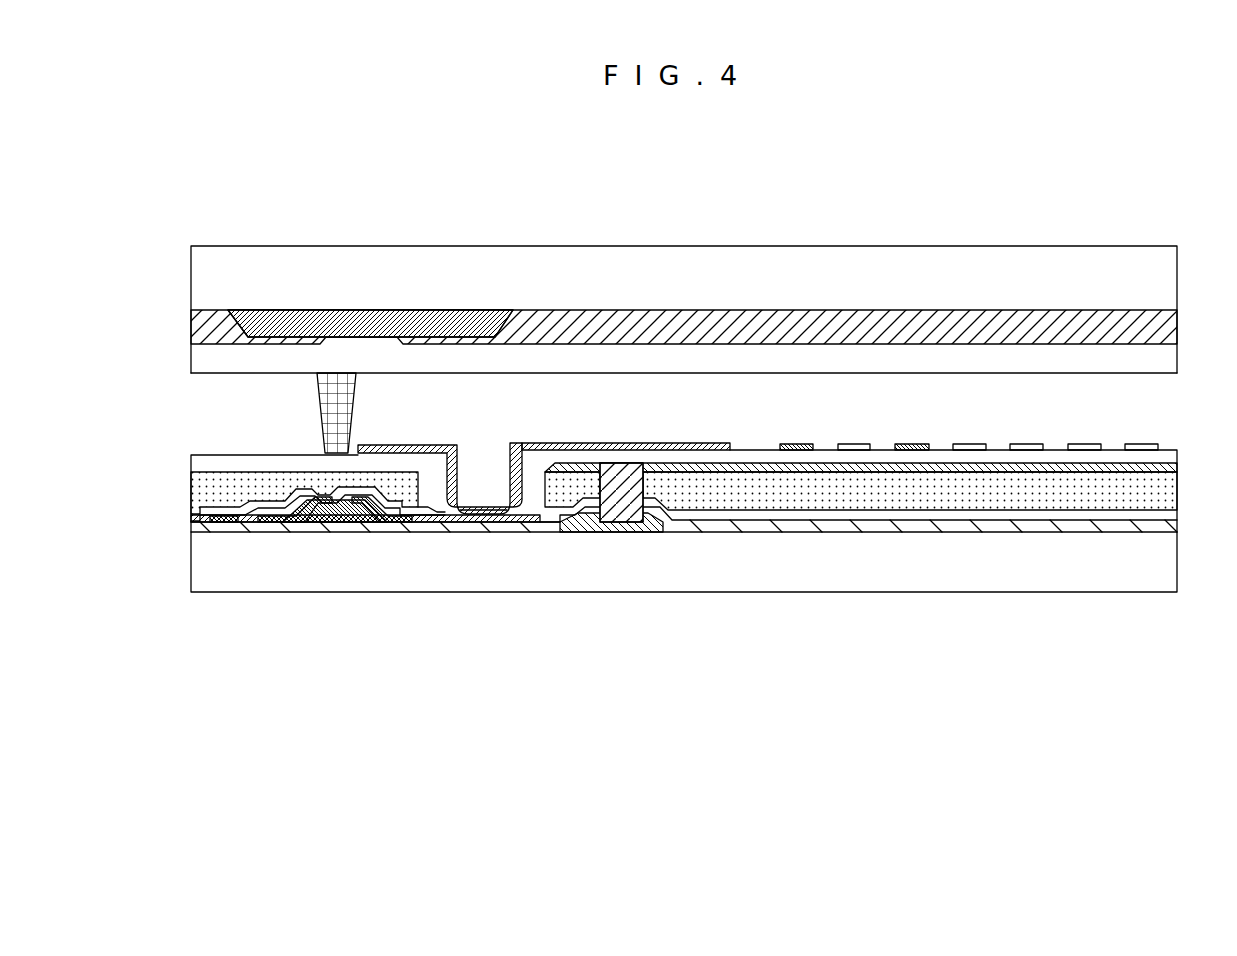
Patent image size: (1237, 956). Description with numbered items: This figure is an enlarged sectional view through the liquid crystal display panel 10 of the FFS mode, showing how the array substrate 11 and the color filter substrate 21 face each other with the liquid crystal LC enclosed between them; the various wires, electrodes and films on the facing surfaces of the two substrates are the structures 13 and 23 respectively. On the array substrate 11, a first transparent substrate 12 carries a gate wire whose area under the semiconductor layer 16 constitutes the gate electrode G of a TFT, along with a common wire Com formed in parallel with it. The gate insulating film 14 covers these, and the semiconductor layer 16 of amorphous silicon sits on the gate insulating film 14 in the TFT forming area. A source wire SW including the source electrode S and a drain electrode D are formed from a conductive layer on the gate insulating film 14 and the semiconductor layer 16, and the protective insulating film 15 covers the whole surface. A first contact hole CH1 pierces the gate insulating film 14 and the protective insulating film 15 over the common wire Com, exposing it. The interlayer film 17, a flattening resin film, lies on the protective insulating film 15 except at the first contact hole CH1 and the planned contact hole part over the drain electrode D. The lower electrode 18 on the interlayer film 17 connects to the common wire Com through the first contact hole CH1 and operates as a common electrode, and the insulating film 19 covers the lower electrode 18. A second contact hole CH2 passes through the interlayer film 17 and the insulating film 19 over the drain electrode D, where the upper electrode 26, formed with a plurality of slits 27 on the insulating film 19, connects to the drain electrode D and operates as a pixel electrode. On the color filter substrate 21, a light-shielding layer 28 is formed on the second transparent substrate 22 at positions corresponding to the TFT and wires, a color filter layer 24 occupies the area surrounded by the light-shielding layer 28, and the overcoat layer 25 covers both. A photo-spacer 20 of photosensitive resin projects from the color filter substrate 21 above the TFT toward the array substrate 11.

The liquid crystal display panel 10 is at (215, 221).
The array substrate 11 is at (858, 597).
The first transparent substrate 12 is at (1108, 575).
The structures 13 is at (1193, 450).
The gate insulating film 14 is at (535, 522).
The protective insulating film 15 is at (437, 528).
The semiconductor layer 16 is at (315, 497).
The interlayer film 17 is at (225, 504).
The lower electrode 18 is at (688, 473).
The insulating film 19 is at (250, 455).
The photo-spacer 20 is at (358, 403).
The color filter substrate 21 is at (628, 235).
The second transparent substrate 22 is at (935, 262).
The structures 23 is at (1193, 309).
The color filter layer 24 is at (1013, 320).
The overcoat layer 25 is at (1088, 360).
The upper electrode 26 is at (703, 444).
The slit 27 is at (884, 443).
The light-shielding layer 28 is at (410, 320).
The liquid crystal LC is at (1170, 406).
The element TFT is at (402, 641).
The gate electrode G is at (332, 524).
The source electrode S is at (285, 522).
The drain electrode D is at (390, 525).
The source wire SW is at (225, 528).
The common wire Com is at (620, 525).
The first contact hole CH1 is at (620, 490).
The second contact hole CH2 is at (487, 500).